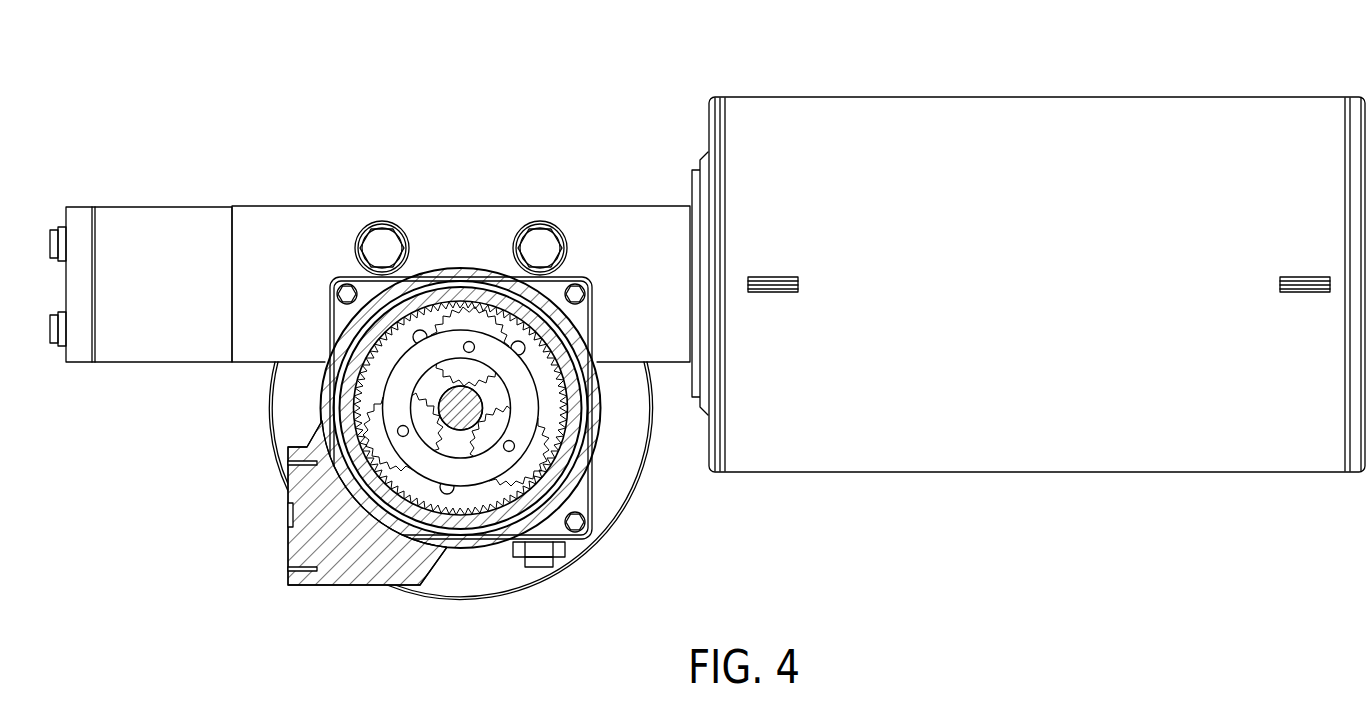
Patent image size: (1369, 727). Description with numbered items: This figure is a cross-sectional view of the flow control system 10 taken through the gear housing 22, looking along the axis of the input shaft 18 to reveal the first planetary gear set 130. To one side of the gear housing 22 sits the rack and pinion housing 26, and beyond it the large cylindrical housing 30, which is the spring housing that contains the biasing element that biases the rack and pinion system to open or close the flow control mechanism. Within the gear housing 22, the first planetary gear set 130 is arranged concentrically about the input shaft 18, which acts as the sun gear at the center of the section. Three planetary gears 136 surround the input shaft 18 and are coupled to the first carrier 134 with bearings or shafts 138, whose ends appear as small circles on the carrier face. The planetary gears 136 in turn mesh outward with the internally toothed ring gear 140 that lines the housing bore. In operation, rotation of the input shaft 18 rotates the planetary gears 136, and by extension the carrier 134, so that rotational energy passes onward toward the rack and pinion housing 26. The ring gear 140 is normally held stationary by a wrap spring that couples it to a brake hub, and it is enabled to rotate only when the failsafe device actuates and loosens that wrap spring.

The flow control system 10 is at (586, 56).
The input shaft 18 is at (462, 413).
The gear housing 22 is at (597, 403).
The rack and pinion housing 26 is at (305, 228).
The housing 30 is at (1033, 97).
The first planetary gear set 130 is at (254, 547).
The first carrier 134 is at (400, 388).
The planetary gears 136 is at (482, 318).
The bearings or shafts 138 is at (469, 341).
The ring gear 140 is at (365, 343).